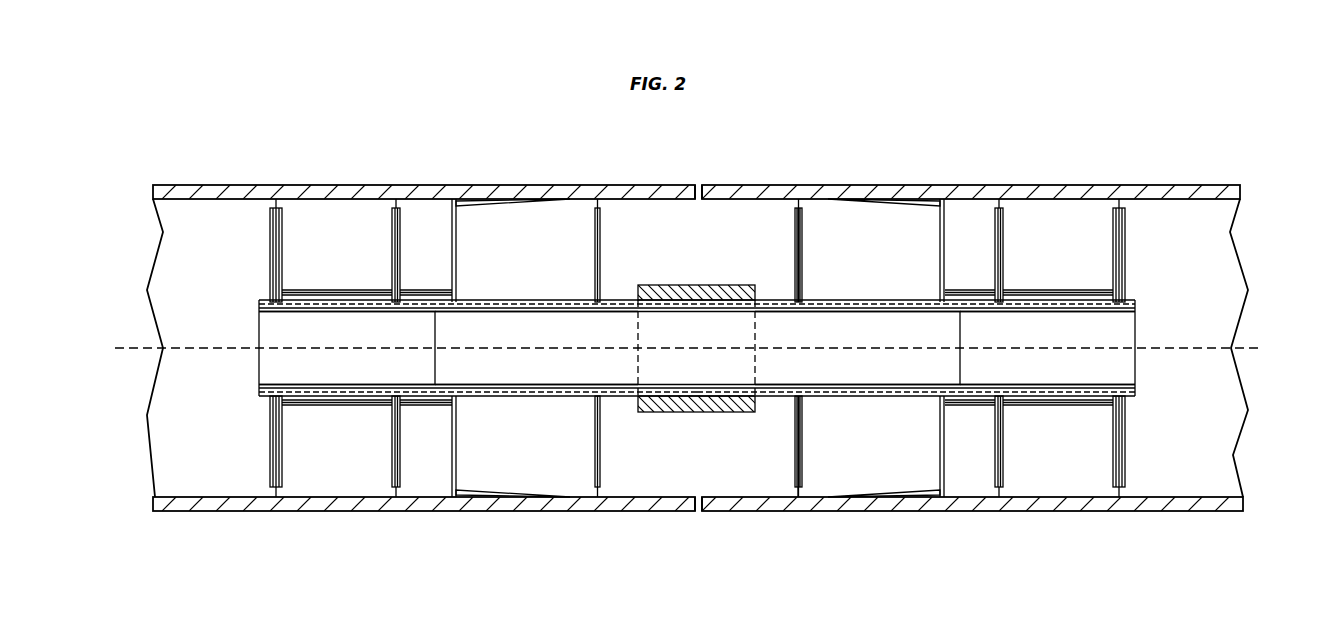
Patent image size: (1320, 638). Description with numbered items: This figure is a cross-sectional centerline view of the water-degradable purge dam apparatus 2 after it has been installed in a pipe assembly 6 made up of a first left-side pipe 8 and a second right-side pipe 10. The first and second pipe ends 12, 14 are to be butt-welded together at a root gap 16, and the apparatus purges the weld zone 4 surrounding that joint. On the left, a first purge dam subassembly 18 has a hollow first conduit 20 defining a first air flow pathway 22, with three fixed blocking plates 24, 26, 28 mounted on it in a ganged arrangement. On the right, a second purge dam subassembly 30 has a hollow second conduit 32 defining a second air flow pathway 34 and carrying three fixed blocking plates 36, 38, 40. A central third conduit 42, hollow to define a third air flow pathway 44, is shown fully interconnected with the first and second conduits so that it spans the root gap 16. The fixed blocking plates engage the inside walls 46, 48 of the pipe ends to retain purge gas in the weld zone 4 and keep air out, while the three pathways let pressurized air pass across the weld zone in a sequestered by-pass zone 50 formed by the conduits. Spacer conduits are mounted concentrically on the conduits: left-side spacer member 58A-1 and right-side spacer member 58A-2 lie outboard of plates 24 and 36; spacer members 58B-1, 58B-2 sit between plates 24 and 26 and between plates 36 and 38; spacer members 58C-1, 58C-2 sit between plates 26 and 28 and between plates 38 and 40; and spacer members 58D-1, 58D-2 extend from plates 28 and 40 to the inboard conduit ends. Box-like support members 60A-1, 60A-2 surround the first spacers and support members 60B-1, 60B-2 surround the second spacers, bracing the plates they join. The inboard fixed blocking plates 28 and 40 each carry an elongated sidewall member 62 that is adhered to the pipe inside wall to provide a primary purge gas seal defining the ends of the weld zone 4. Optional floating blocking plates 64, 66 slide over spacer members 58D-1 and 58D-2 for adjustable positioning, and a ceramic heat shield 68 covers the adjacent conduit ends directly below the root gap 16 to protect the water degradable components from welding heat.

The purge dam apparatus 2 is at (248, 458).
The weld zone 4 is at (752, 465).
The pipe assembly 6 is at (470, 136).
The first left-side pipe 8 is at (162, 242).
The second right-side pipe 10 is at (1238, 250).
The first pipe end 12 is at (590, 185).
The second pipe end 14 is at (763, 185).
The root gap 16 is at (697, 180).
The first purge dam subassembly 18 is at (230, 222).
The first conduit 20 is at (275, 305).
The first air flow pathway 22 is at (330, 338).
The fixed blocking plate 24 is at (285, 222).
The fixed blocking plate 26 is at (400, 225).
The inboard fixed blocking plate 28 is at (460, 240).
The second purge dam subassembly 30 is at (1160, 225).
The second conduit 32 is at (1130, 305).
The second air flow pathway 34 is at (1050, 338).
The fixed blocking plate 36 is at (1113, 225).
The fixed blocking plate 38 is at (995, 235).
The inboard fixed blocking plate 40 is at (940, 240).
The third conduit 42 is at (563, 307).
The third air flow pathway 44 is at (860, 338).
The inside wall 46 is at (188, 497).
The inside wall 48 is at (1200, 497).
The sequestered by-pass zone 50 is at (283, 372).
The left-side spacer member 58A-1 is at (265, 397).
The right-side spacer member 58A-2 is at (1135, 397).
The left-side spacer member 58B-1 is at (345, 405).
The right-side spacer member 58B-2 is at (1070, 402).
The left-side spacer member 58C-1 is at (433, 402).
The right-side spacer member 58C-2 is at (968, 402).
The left-side spacer member 58D-1 is at (530, 402).
The right-side spacer member 58D-2 is at (885, 402).
The left-side support member 60A-1 is at (345, 290).
The right-side support member 60A-2 is at (1050, 290).
The left-side support member 60B-1 is at (432, 288).
The right-side support member 60B-2 is at (963, 290).
The elongated sidewall member 62 is at (525, 205).
The floating blocking plate 64 is at (600, 240).
The floating blocking plate 66 is at (795, 243).
The heat shield 68 is at (705, 285).